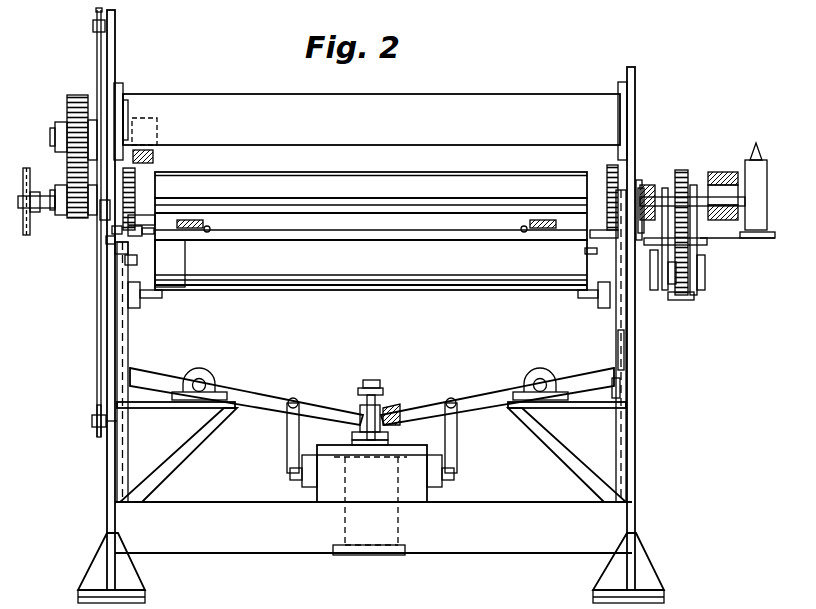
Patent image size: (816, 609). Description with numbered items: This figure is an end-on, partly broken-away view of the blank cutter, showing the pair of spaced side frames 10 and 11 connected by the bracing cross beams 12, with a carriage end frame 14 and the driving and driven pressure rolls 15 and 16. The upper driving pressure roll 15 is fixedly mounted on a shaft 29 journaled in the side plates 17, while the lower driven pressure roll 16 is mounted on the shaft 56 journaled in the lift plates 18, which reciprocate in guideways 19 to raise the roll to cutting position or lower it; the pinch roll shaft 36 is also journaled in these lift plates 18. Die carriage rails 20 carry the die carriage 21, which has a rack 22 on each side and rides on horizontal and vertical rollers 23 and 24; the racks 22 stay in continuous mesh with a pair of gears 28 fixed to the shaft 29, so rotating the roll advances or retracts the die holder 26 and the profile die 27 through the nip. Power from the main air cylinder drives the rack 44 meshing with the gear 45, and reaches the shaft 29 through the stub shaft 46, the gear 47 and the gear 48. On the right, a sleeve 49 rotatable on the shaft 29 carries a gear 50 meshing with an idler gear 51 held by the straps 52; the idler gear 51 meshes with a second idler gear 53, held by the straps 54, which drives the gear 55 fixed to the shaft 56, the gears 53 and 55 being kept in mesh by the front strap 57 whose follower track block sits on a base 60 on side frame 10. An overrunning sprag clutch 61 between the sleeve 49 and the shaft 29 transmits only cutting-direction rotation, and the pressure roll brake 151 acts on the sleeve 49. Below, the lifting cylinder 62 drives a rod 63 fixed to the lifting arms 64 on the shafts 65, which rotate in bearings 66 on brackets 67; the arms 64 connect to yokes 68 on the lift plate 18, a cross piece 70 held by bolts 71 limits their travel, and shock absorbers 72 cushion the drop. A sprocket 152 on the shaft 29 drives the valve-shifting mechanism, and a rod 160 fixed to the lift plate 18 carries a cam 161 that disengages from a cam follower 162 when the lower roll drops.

The side frame 10 is at (635, 485).
The side frame 11 is at (107, 482).
The bracing cross beams 12 is at (500, 553).
The carriage end frame 14 is at (118, 250).
The driving pressure roll 15 is at (498, 185).
The driven pressure roll 16 is at (389, 290).
The side plates 17 is at (124, 148).
The lift plates 18 is at (624, 352).
The guideways 19 is at (128, 354).
The die carriage rails 20 is at (110, 240).
The die carriage 21 is at (148, 236).
The rack 22 is at (148, 218).
The horizontal rollers 23 is at (114, 232).
The vertical rollers 24 is at (125, 262).
The die holder 26 is at (208, 236).
The profile die 27 is at (189, 232).
The gears 28 is at (136, 172).
The shaft 29 is at (47, 210).
The shaft 36 is at (150, 300).
The rack 44 is at (153, 160).
The gear 45 is at (152, 148).
The stub shaft 46 is at (55, 135).
The gear 47 is at (80, 95).
The gear 48 is at (70, 215).
The sleeve 49 is at (730, 175).
The gear 50 is at (681, 170).
The idler gear 51 is at (665, 188).
The straps 52 is at (663, 197).
The second idler gear 53 is at (681, 300).
The straps 54 is at (672, 282).
The gear 55 is at (700, 288).
The shaft 56 is at (585, 252).
The front strap 57 is at (697, 270).
The base 60 is at (654, 275).
The overrunning sprag clutch 61 is at (714, 172).
The lifting cylinder 62 is at (400, 490).
The rod 63 is at (388, 437).
The lifting arms 64 is at (297, 395).
The shafts 65 is at (207, 395).
The bearings 66 is at (206, 376).
The brackets 67 is at (171, 465).
The yokes 68 is at (624, 391).
The cross piece 70 is at (358, 391).
The bolts 71 is at (383, 393).
The shock absorbers 72 is at (302, 478).
The pressure roll brake 151 is at (768, 185).
The sprocket 152 is at (26, 168).
The rod 160 is at (97, 380).
The cam 161 is at (97, 38).
The cam follower 162 is at (93, 26).